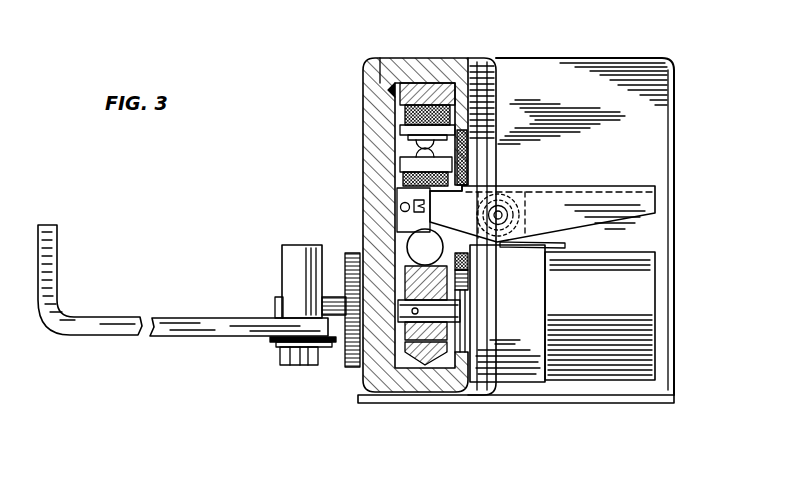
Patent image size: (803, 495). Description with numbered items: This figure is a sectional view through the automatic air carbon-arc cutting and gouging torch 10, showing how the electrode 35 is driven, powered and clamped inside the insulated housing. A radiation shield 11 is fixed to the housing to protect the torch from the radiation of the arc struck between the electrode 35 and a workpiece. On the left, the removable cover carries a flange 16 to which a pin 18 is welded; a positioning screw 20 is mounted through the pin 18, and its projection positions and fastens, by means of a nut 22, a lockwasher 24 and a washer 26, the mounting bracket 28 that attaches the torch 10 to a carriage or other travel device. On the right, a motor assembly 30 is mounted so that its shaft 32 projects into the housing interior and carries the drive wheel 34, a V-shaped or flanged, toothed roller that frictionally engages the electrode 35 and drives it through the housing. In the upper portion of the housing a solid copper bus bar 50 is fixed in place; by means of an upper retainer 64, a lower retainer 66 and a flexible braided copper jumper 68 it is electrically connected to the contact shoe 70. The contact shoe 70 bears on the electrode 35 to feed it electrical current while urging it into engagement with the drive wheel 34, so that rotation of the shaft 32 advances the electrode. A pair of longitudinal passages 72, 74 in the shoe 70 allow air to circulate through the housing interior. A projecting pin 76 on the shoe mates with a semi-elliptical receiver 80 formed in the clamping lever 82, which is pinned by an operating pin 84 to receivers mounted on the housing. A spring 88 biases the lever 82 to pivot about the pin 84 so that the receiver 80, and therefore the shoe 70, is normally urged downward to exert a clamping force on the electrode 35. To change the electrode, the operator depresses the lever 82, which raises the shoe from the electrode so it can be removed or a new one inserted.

The automatic Air Carbon-Arc Cutting and Gouging Torch 10 is at (446, 45).
The radiation shield 11 is at (630, 36).
The flange 16 is at (348, 368).
The pin 18 is at (280, 297).
The positioning screw 20 is at (285, 252).
The nut 22 is at (300, 360).
The lockwasher 24 is at (285, 347).
The washer 26 is at (272, 340).
The mounting bracket 28 is at (160, 322).
The motor assembly 30 is at (640, 318).
The shaft 32 is at (445, 313).
The drive wheel 34 is at (418, 350).
The electrode 35 is at (436, 257).
The bus bar 50 is at (410, 93).
The upper retainer 64 is at (405, 129).
The lower retainer 66 is at (404, 160).
The flexible braided jumper 68 is at (405, 112).
The contact shoe 70 is at (395, 243).
The longitudinal passage 72 is at (400, 208).
The longitudinal passage 74 is at (487, 181).
The projecting pin 76 is at (405, 192).
The semi-eliptical receiver 80 is at (472, 270).
The clamping lever 82 is at (620, 185).
The operating pin 84 is at (515, 215).
The spring 88 is at (566, 244).